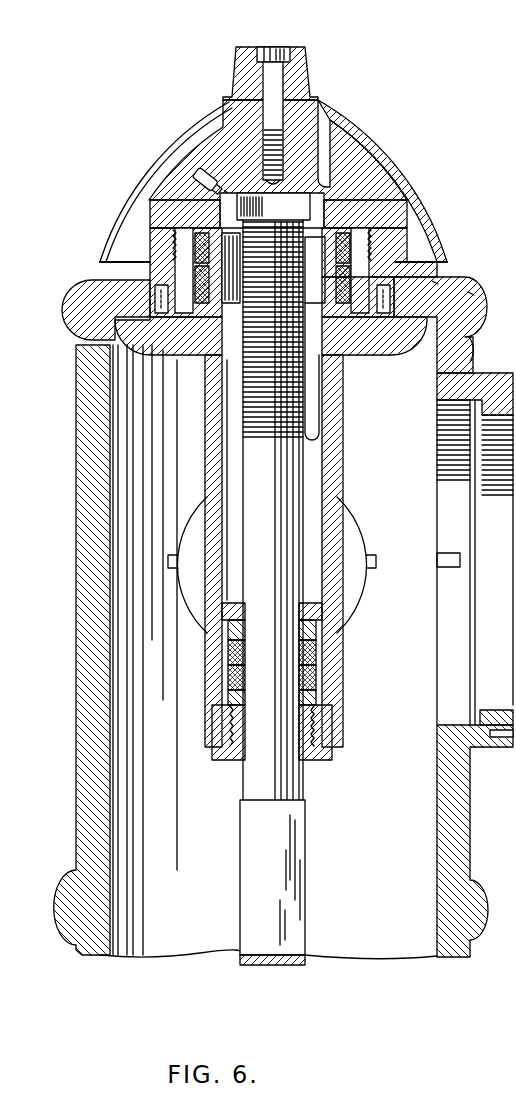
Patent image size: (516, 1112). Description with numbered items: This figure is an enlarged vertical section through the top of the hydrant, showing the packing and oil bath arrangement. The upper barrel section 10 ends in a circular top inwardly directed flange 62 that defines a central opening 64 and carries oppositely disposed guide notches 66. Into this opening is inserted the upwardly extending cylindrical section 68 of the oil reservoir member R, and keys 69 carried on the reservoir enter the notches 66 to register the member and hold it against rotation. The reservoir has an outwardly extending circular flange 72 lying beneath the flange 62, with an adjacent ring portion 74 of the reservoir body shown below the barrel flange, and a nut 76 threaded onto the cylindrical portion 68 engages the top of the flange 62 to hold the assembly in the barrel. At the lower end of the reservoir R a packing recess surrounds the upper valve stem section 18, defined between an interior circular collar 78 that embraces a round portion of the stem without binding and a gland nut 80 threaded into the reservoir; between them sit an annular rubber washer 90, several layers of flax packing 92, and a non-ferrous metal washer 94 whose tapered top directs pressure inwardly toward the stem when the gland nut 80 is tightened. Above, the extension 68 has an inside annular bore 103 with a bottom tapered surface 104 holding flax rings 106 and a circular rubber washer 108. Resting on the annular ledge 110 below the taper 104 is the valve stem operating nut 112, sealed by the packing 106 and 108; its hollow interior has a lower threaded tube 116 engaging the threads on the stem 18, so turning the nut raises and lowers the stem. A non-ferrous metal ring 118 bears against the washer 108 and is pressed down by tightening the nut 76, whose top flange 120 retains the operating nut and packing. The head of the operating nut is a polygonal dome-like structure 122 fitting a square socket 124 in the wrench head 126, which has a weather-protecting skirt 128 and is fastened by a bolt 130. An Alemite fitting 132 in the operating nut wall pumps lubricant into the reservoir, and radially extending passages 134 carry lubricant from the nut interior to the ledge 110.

The upper barrel section 10 is at (88, 616).
The upper valve stem section 18 is at (287, 498).
The top inwardly directed flange 62 is at (470, 292).
The central opening 64 is at (420, 277).
The guide notches 66 is at (434, 281).
The upwardly extending cylindrical section 68 is at (395, 242).
The keys 69 is at (155, 297).
The outwardly extending circular flange 72 is at (466, 346).
The ring 74 is at (372, 337).
The nut 76 is at (386, 232).
The interior circular collar 78 is at (312, 614).
The gland nut 80 is at (312, 755).
The annular rubber washer 90 is at (316, 628).
The flax packing layers 92 is at (318, 680).
The non-ferrous metal washer 94 is at (318, 703).
The inside annular bore 103 is at (150, 269).
The bottom tapered surface 104 is at (166, 348).
The flax rings 106 is at (180, 256).
The circular rubber washer 108 is at (166, 228).
The annular ledge 110 is at (205, 362).
The valve stem operating nut 112 is at (318, 196).
The lower cylindrical threaded tube 116 is at (238, 408).
The non-ferrous metal ring 118 is at (345, 207).
The top flange of securing nut 120 is at (330, 202).
The dome-like head 122 is at (290, 168).
The socket 124 is at (284, 135).
The wrench head 126 is at (293, 80).
The skirt 128 is at (166, 157).
The bolt 130 is at (266, 52).
The Alemite fitting 132 is at (207, 174).
The radially extending passages 134 is at (348, 360).
The oil reservoir member R is at (335, 466).